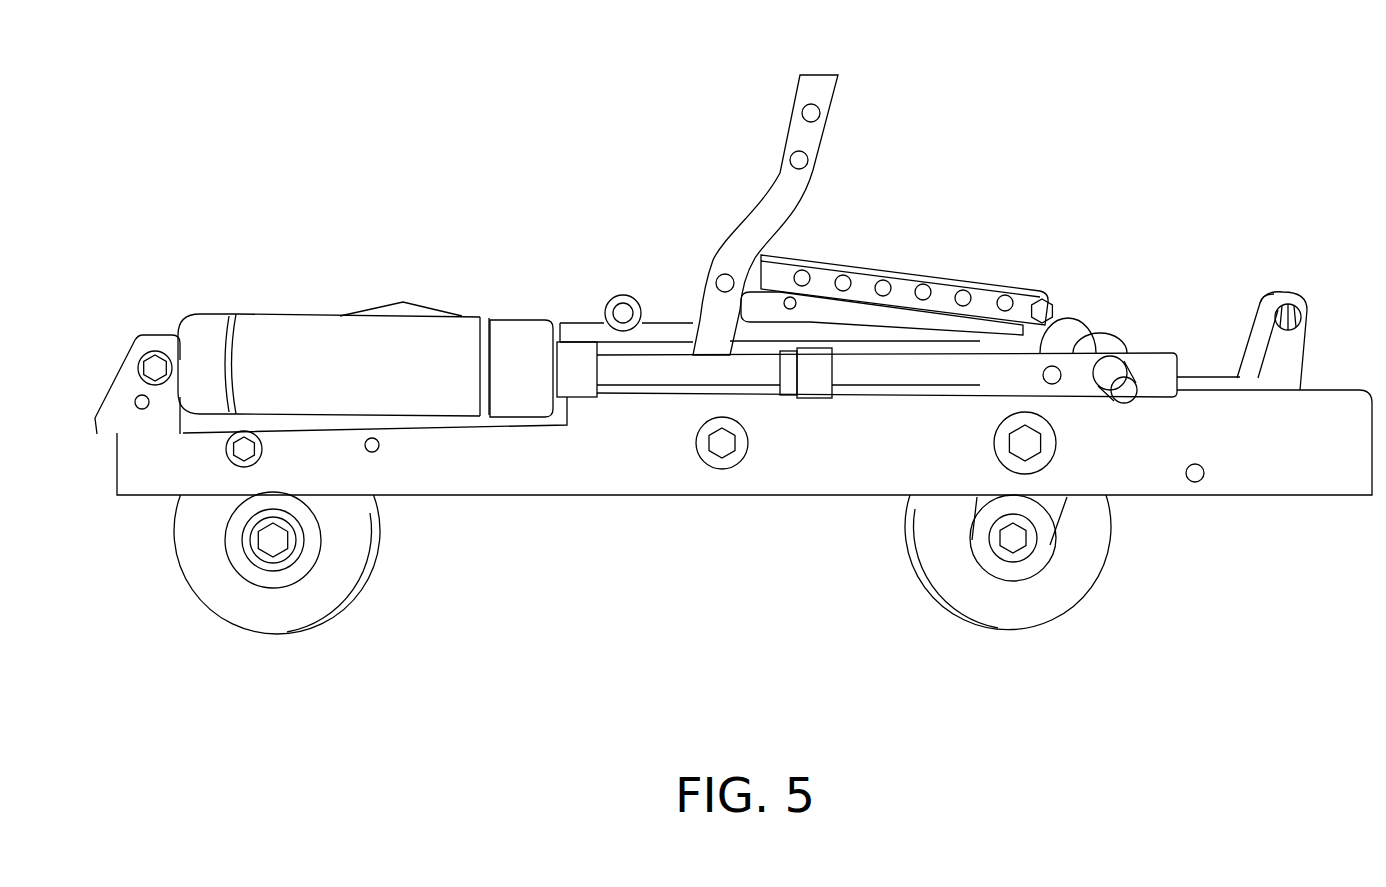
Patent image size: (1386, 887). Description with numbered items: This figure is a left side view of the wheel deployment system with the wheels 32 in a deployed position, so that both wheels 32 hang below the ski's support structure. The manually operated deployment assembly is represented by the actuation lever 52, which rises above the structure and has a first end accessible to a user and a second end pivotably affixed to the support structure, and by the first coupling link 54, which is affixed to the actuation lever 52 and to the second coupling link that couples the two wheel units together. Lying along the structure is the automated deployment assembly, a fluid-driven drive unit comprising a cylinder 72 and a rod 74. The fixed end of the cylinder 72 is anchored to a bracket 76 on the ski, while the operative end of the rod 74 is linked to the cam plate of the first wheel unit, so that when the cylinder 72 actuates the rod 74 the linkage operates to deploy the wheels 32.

The wheel 32 is at (272, 613).
The actuation lever 52 is at (810, 135).
The first coupling link 54 is at (945, 290).
The cylinder 72 is at (305, 343).
The rod 74 is at (643, 380).
The bracket 76 is at (140, 358).